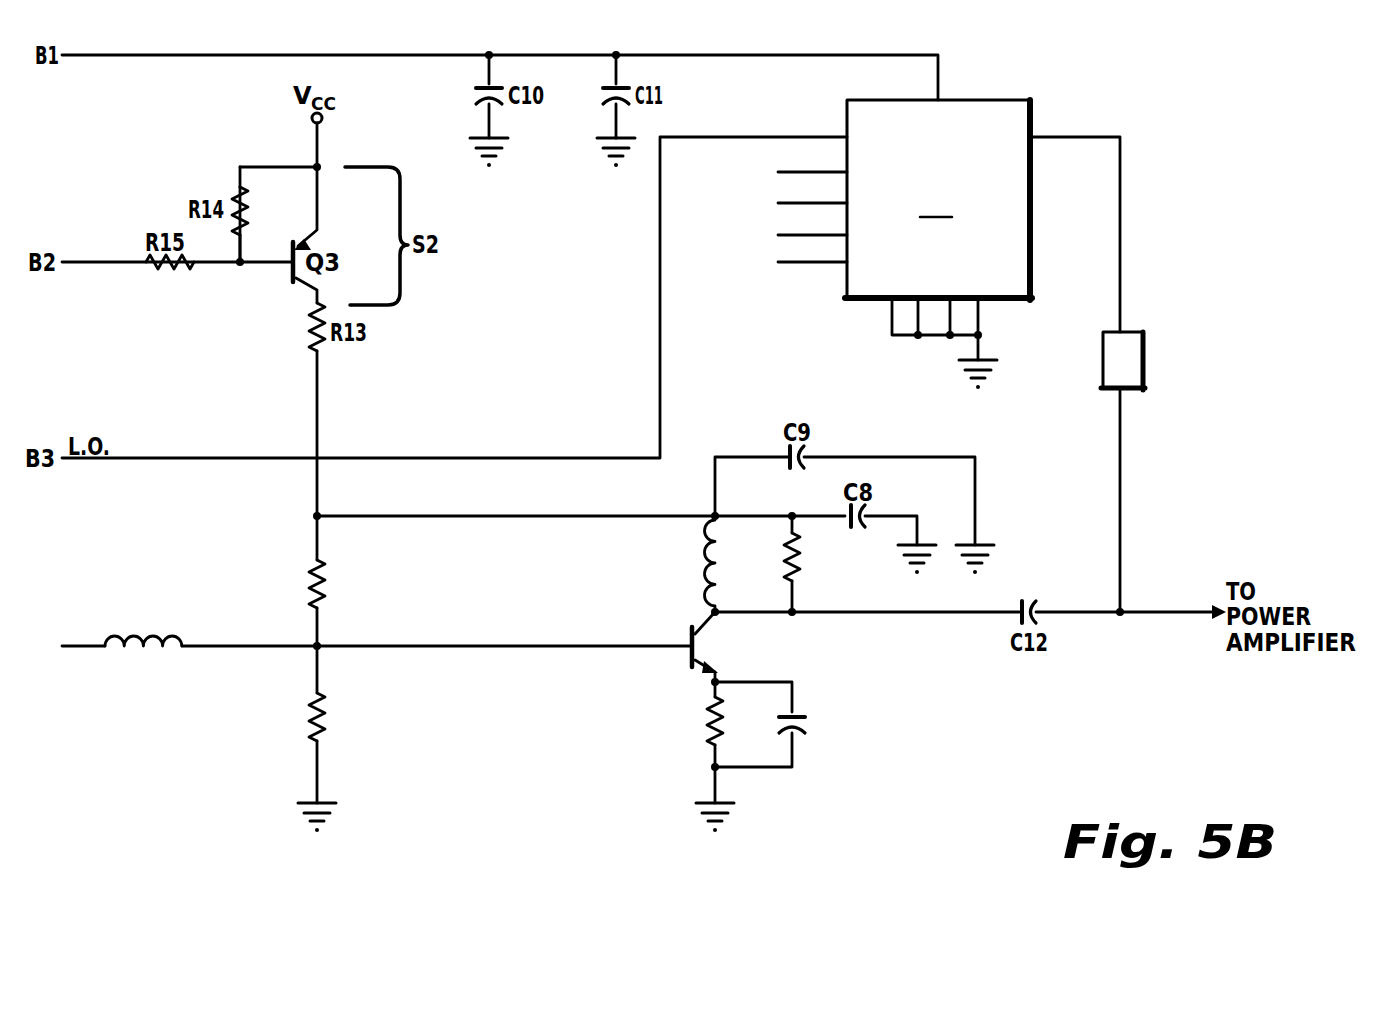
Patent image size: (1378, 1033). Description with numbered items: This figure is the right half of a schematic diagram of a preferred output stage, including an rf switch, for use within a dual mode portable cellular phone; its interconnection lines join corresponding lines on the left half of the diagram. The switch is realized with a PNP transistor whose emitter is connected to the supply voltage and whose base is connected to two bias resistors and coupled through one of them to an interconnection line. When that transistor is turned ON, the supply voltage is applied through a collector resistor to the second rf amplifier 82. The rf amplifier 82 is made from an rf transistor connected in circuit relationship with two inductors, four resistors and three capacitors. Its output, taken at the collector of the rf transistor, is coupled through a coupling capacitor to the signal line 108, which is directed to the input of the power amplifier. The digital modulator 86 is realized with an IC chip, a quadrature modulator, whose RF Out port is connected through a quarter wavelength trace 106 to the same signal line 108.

The rf amplifier 82 is at (822, 830).
The digital modulator 86 is at (1003, 88).
The quarter wavelength trace 106 is at (1145, 358).
The signal line 108 is at (1152, 614).